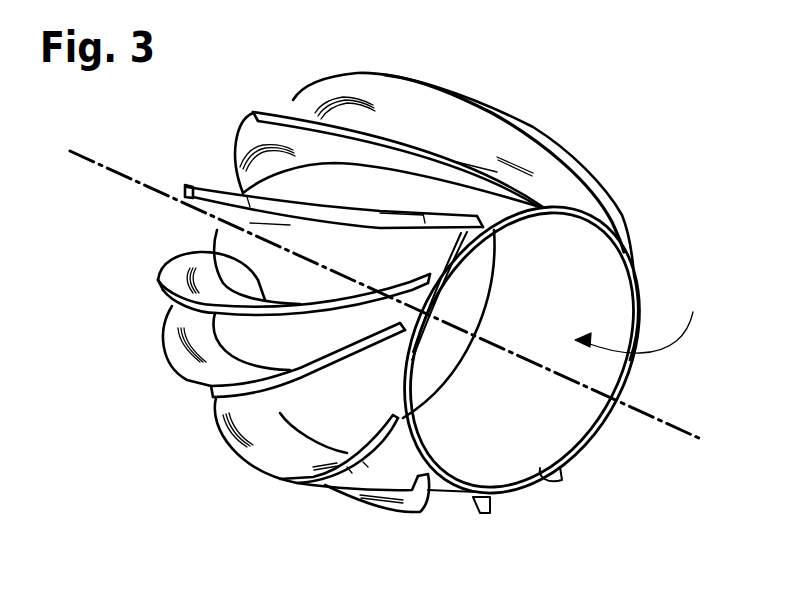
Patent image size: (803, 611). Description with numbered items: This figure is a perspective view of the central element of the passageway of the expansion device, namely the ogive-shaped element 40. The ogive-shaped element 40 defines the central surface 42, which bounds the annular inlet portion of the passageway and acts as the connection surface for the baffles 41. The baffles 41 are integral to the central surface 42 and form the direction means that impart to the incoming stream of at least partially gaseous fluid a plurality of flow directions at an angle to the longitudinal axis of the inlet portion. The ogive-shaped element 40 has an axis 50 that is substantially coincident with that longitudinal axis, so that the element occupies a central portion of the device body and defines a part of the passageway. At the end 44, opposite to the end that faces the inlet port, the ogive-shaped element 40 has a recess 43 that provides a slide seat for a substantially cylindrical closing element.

The ogive-shaped element 40 is at (603, 153).
The baffles 41 is at (218, 248).
The central surface 42 is at (237, 242).
The recess 43 is at (645, 317).
The end 44 is at (525, 488).
The axis 50 is at (688, 430).